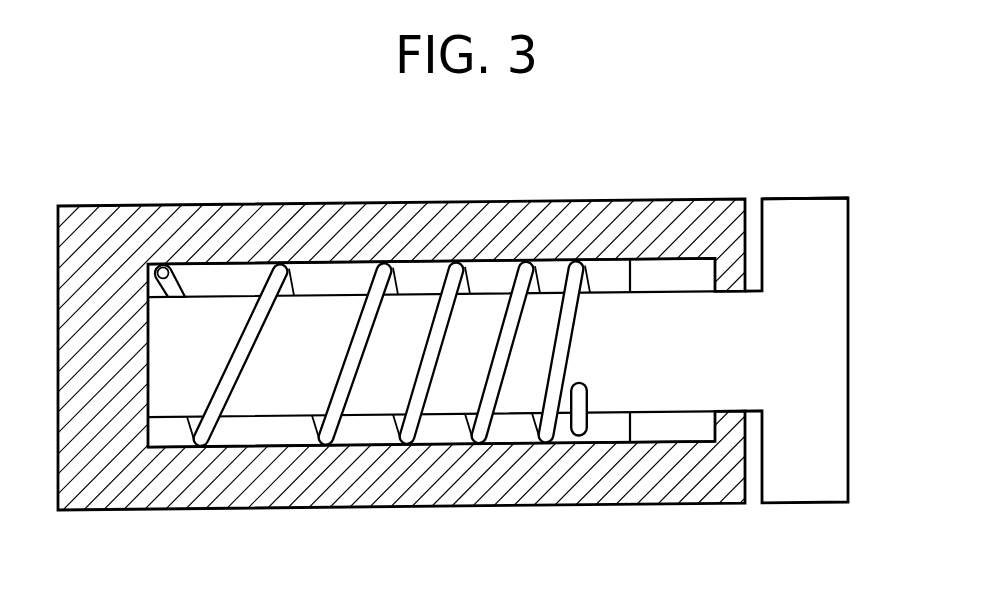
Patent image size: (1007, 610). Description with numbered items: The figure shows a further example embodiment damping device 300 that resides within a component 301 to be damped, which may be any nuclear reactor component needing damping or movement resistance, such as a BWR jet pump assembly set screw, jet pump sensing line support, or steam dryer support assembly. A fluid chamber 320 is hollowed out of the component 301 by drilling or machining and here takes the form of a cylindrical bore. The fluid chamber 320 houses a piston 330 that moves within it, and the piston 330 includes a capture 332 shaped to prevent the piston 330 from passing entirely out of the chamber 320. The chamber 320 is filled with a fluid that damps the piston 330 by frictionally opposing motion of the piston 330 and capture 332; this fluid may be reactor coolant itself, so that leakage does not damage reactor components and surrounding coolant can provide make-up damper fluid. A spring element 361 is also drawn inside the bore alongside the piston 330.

The damping device 300 is at (808, 371).
The component 301 is at (58, 207).
The fluid chamber 320 is at (508, 437).
The piston 330 is at (796, 190).
The capture 332 is at (603, 250).
The coil spring 361 is at (372, 438).